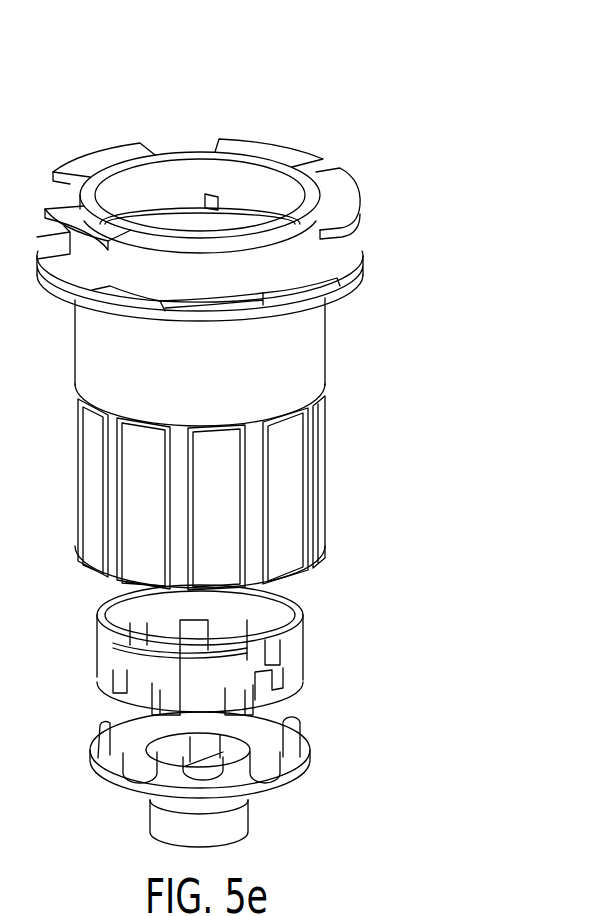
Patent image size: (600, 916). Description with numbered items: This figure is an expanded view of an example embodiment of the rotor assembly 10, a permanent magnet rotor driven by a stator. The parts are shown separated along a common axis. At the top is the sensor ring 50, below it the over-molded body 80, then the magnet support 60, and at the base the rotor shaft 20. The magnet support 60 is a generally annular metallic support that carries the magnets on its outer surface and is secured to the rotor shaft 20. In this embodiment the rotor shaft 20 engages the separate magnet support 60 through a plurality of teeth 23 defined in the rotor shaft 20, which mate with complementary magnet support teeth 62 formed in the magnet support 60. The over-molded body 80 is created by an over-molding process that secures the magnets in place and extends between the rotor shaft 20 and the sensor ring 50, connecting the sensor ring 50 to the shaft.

The rotor assembly 10 is at (338, 88).
The sensor ring 50 is at (337, 198).
The over-molded body 80 is at (303, 338).
The magnet support 60 is at (290, 648).
The magnet support teeth 62 is at (270, 692).
The teeth 23 is at (283, 747).
The rotor shaft 20 is at (248, 796).